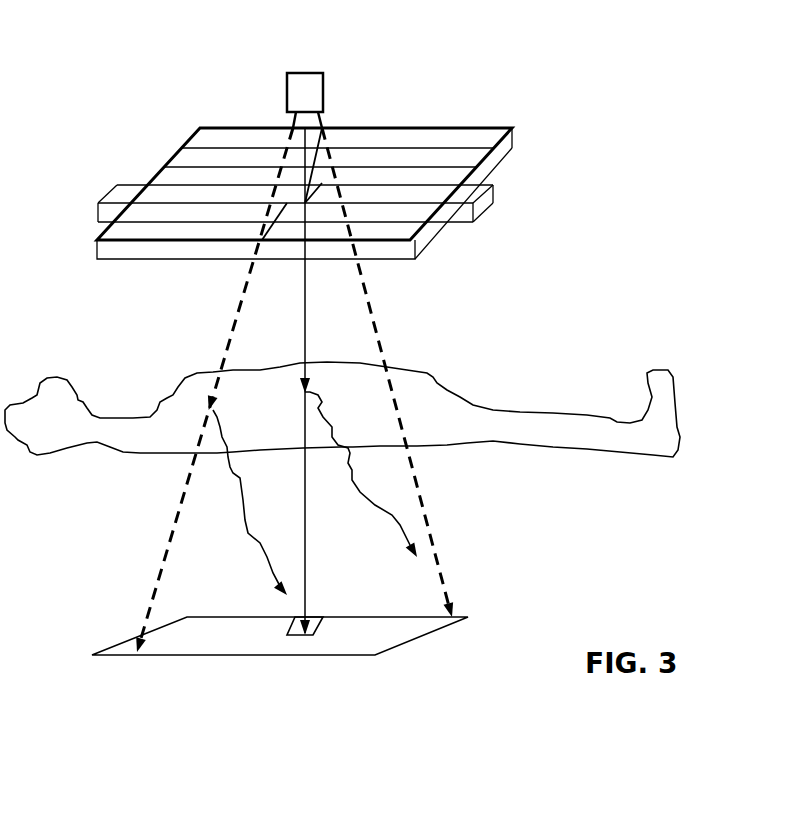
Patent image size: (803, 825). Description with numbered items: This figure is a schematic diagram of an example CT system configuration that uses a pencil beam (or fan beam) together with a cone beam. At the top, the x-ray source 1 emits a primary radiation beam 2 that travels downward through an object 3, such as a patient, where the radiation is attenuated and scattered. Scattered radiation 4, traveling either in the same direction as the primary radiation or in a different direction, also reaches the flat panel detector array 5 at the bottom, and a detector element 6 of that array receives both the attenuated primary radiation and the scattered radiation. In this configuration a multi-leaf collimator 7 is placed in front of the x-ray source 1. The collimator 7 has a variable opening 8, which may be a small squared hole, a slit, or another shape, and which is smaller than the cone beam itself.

The x-ray source 1 is at (303, 92).
The primary radiation beam 2 is at (305, 315).
The object 3 is at (435, 372).
The scattered radiation 4 is at (245, 520).
The flat panel detector array 5 is at (207, 655).
The detector element 6 is at (320, 635).
The multi-leaf collimator 7 is at (512, 128).
The opening 8 is at (285, 183).